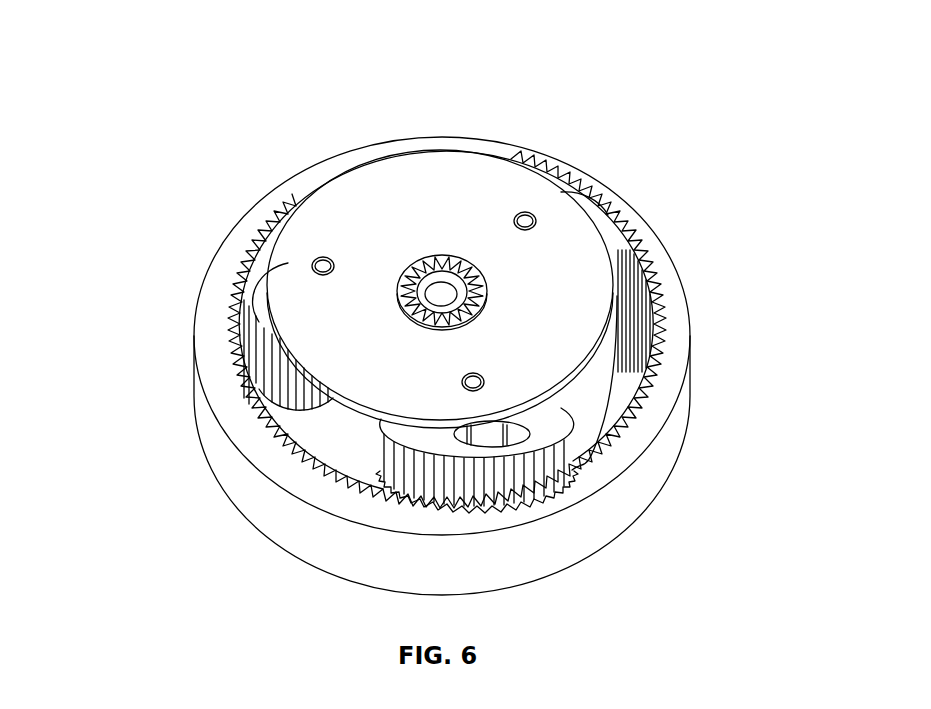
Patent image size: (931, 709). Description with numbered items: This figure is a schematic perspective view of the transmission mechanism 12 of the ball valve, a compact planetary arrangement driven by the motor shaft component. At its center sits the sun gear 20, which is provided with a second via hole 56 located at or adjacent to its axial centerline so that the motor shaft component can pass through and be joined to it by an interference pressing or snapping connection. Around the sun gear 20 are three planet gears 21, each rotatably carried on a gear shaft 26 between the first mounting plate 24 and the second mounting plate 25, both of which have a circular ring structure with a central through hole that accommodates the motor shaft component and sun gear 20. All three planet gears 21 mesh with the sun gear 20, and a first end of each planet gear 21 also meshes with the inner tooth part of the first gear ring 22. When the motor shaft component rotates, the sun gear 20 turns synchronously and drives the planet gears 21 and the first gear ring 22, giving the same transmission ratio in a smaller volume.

The transmission mechanism 12 is at (295, 133).
The sun gear 20 is at (486, 292).
The planet gear 21 is at (600, 184).
The first gear ring 22 is at (663, 452).
The first mounting plate 24 is at (310, 357).
The second mounting plate 25 is at (322, 447).
The gear shaft 26 is at (312, 263).
The second via hole 56 is at (438, 295).